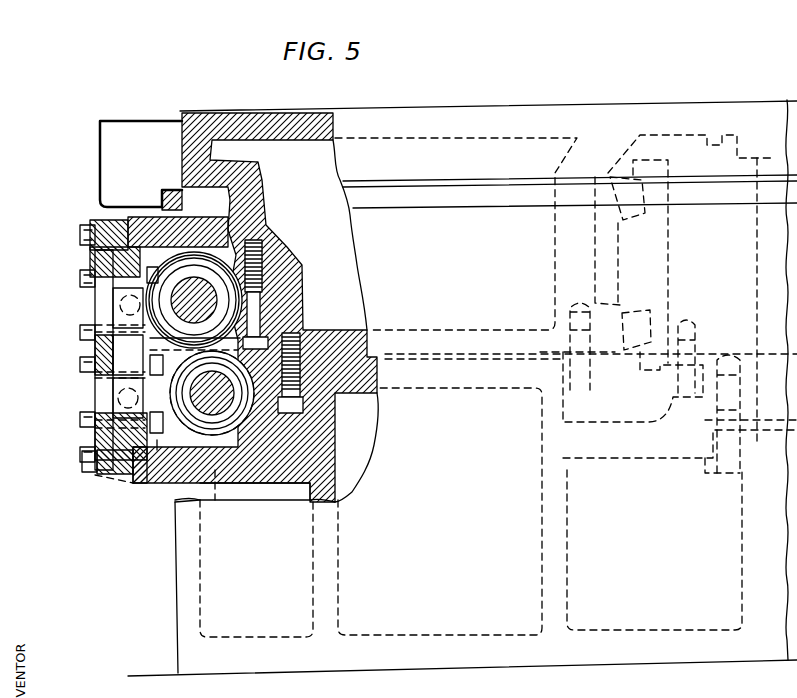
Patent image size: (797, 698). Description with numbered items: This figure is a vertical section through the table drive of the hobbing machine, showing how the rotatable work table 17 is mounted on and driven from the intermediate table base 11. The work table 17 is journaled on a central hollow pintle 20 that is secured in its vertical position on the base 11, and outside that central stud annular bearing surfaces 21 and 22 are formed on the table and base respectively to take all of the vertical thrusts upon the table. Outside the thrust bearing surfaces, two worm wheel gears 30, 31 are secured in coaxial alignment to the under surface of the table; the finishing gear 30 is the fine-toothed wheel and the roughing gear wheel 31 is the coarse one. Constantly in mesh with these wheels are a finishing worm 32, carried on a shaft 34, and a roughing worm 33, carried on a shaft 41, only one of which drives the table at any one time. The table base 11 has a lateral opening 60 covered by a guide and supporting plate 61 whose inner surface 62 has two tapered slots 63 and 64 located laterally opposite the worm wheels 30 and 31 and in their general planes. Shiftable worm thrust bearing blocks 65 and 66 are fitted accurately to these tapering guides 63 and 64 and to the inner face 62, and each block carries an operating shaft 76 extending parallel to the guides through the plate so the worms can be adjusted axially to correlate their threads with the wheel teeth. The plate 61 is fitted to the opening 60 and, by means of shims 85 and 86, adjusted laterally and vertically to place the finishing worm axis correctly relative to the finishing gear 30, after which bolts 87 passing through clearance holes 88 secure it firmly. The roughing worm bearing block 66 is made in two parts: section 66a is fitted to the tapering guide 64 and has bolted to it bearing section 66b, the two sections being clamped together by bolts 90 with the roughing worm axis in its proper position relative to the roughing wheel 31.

The intermediate base 11 is at (185, 627).
The work table 17 is at (470, 117).
The central hollow pintle 20 is at (683, 160).
The annular bearing surface 21 is at (353, 337).
The annular bearing surface 22 is at (508, 355).
The finishing worm wheel gear 30 is at (212, 303).
The roughing worm wheel gear 31 is at (267, 394).
The finishing worm 32 is at (262, 266).
The roughing worm 33 is at (217, 403).
The finishing worm shaft 34 is at (240, 284).
The roughing worm shaft 41 is at (232, 465).
The lateral opening 60 is at (148, 250).
The guide and supporting plate 61 is at (113, 437).
The inner surface of the supporting plate 62 is at (133, 255).
The tapered slot 63 is at (112, 320).
The tapered slot 64 is at (115, 378).
The worm thrust bearing block 65 is at (112, 292).
The worm thrust bearing block 66 is at (100, 411).
The bearing block section 66a is at (157, 445).
The bearing block section 66b is at (215, 500).
The operating shaft 76 is at (120, 305).
The shim 85 is at (122, 224).
The shim 86 is at (137, 485).
The bolt 87 is at (80, 233).
The clearance hole 88 is at (107, 477).
The bolt 90 is at (173, 508).